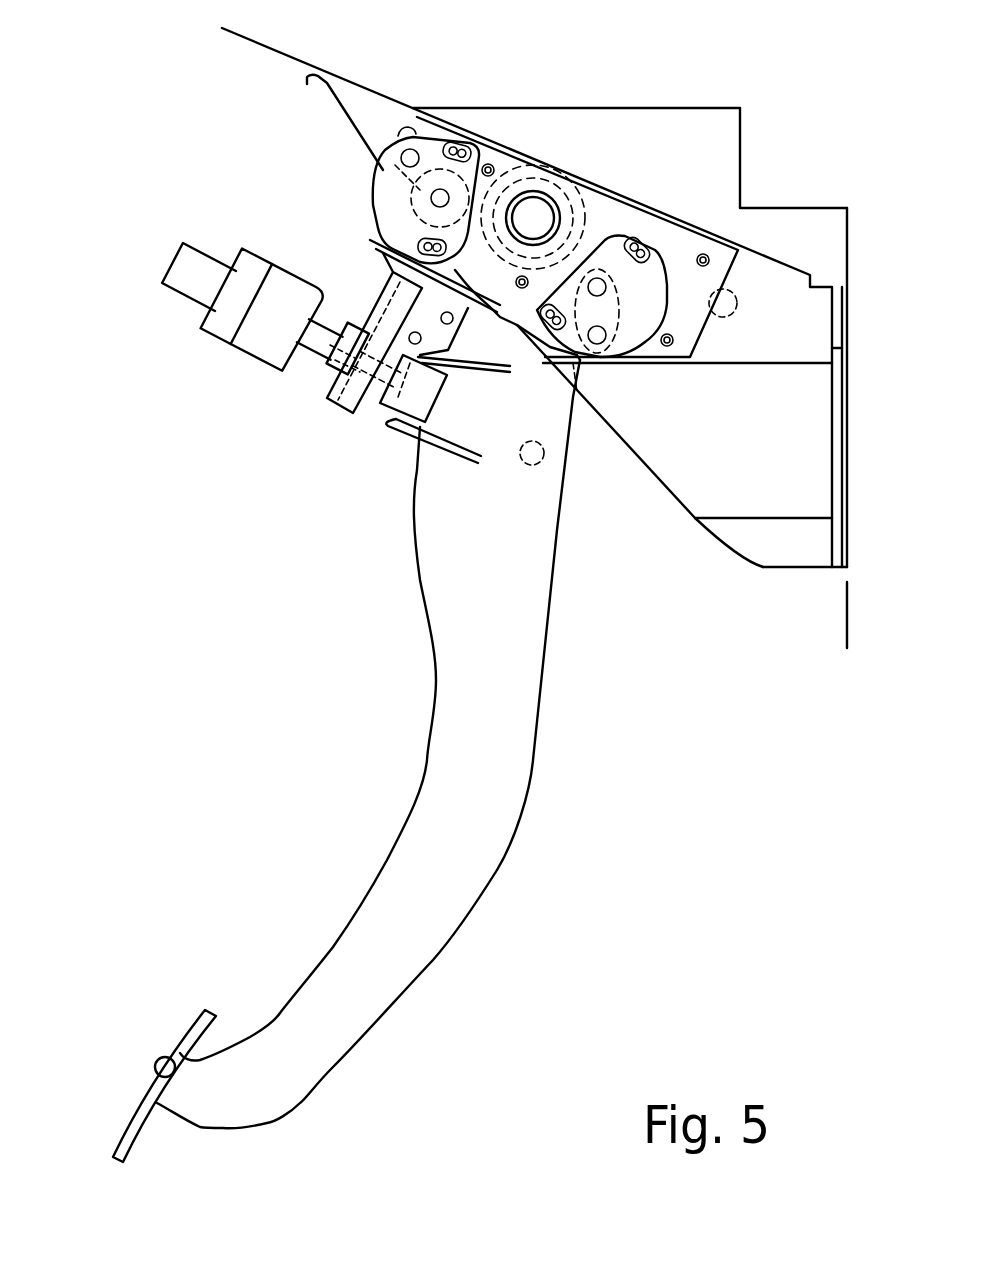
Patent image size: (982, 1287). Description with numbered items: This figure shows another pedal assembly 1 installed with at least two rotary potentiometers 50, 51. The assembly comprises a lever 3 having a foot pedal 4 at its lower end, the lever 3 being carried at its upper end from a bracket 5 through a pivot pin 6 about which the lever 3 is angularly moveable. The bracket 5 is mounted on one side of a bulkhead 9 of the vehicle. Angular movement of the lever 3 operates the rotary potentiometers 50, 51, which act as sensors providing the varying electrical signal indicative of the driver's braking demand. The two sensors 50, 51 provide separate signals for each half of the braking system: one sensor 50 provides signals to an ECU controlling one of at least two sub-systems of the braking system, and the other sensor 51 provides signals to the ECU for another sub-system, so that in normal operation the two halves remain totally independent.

The pedal assembly 1 is at (346, 716).
The lever 3 is at (390, 865).
The foot pedal 4 is at (192, 1037).
The bracket 5 is at (805, 412).
The pivot pin 6 is at (542, 207).
The bulkhead 9 is at (847, 620).
The rotary potentiometer 50 is at (433, 143).
The rotary potentiometer 51 is at (653, 267).